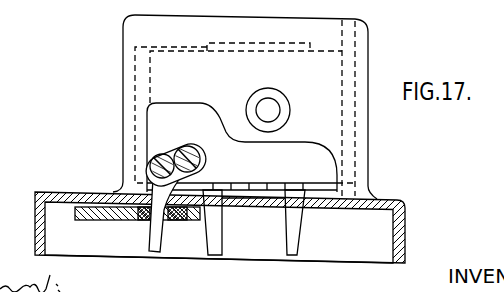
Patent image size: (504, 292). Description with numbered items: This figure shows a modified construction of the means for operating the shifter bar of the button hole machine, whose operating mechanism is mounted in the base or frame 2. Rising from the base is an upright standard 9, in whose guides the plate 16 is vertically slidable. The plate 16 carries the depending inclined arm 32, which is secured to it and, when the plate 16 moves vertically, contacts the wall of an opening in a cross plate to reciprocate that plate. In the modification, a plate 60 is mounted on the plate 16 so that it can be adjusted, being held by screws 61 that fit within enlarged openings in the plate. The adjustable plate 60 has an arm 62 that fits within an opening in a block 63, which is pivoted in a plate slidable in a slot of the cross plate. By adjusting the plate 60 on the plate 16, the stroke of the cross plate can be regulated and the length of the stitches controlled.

The base or frame 2 is at (404, 205).
The upright standard 9 is at (363, 35).
The plate 16 is at (242, 143).
The depending inclined arm 32 is at (218, 226).
The adjustable plate 60 is at (168, 153).
The screws 61 is at (201, 161).
The arm 62 is at (158, 251).
The block 63 is at (152, 223).